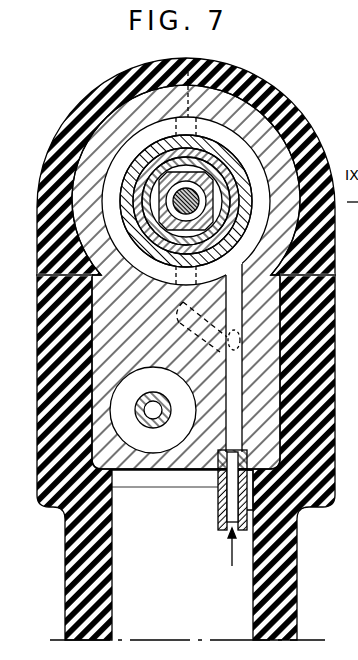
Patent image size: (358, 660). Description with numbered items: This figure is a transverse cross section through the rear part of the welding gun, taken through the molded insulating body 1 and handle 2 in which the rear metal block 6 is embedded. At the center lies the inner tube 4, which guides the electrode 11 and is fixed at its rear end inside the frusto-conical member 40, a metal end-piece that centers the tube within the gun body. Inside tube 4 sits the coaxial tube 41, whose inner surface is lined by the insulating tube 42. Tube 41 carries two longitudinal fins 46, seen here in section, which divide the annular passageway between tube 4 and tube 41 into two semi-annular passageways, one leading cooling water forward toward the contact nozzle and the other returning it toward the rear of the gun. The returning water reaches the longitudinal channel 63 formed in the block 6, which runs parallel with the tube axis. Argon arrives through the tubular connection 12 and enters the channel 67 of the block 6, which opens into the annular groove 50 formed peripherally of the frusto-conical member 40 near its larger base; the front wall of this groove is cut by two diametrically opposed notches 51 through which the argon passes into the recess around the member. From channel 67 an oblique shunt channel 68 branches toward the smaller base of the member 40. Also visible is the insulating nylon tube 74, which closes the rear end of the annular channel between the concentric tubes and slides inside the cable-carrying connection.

The body 1 is at (280, 100).
The handle 2 is at (313, 500).
The inner tube 4 is at (248, 207).
The rear metal block 6 is at (228, 105).
The electrode 11 is at (120, 160).
The tubular connection 12 is at (216, 507).
The frusto-conical member 40 is at (172, 204).
The coaxial tube 41 is at (172, 210).
The insulating tube 42 is at (172, 199).
The longitudinal fins 46 is at (110, 82).
The annular groove 50 is at (172, 190).
The notches 51 is at (190, 57).
The longitudinal channel 63 is at (173, 450).
The channel 67 is at (237, 394).
The shunt channel 68 is at (241, 338).
The tube 74 is at (173, 452).